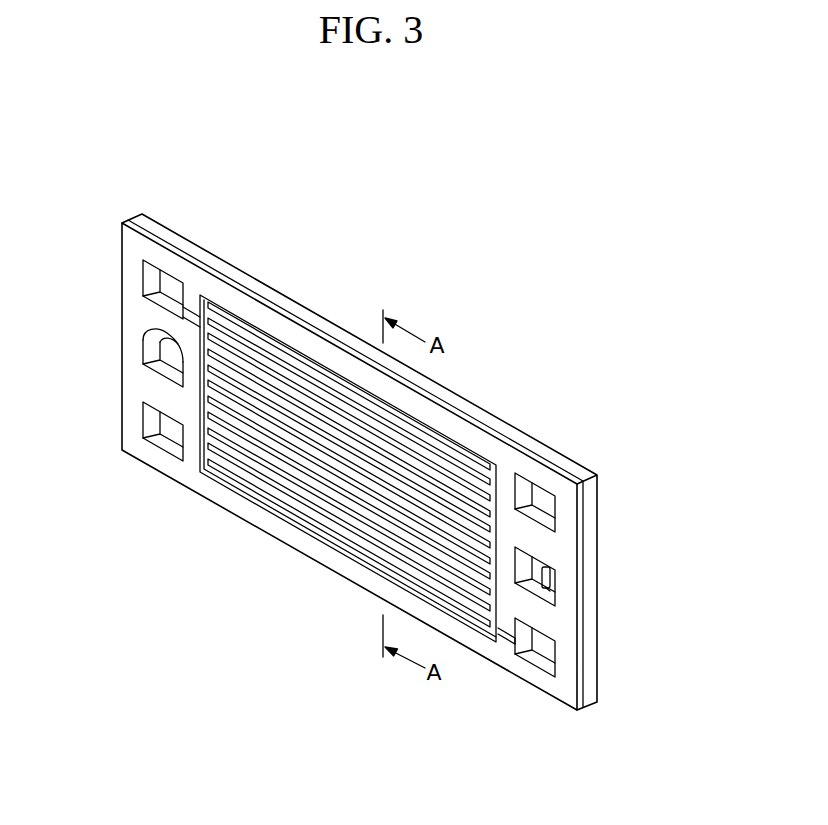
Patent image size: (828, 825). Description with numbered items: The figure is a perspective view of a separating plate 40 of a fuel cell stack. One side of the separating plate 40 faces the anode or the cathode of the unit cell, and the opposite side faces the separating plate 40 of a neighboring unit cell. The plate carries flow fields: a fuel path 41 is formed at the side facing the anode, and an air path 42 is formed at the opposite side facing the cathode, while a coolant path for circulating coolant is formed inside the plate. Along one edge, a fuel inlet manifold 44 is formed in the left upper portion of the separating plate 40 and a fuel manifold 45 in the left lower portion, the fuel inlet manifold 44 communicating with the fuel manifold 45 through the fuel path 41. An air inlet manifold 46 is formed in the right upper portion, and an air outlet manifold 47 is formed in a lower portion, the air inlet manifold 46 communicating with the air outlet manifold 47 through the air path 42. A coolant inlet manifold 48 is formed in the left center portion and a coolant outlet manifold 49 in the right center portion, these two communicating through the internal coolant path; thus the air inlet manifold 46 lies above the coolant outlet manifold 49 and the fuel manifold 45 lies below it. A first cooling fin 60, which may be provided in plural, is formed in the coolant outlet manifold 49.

The separating plate 40 is at (142, 214).
The fuel path 41 is at (237, 487).
The air path 42 is at (322, 520).
The fuel inlet manifold 44 is at (168, 292).
The fuel manifold 45 is at (552, 647).
The air inlet manifold 46 is at (542, 498).
The air outlet manifold 47 is at (172, 427).
The coolant inlet manifold 48 is at (168, 356).
The coolant outlet manifold 49 is at (557, 575).
The first cooling fin 60 is at (553, 587).